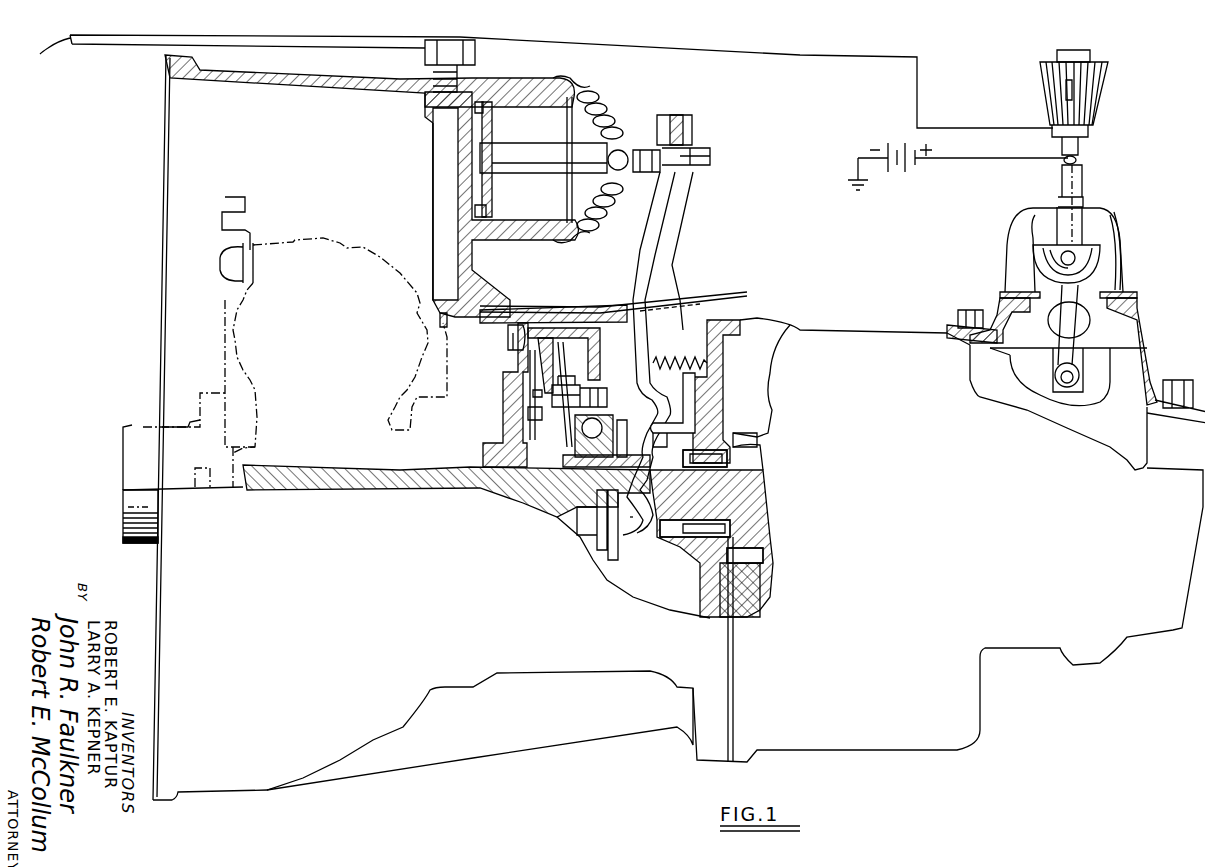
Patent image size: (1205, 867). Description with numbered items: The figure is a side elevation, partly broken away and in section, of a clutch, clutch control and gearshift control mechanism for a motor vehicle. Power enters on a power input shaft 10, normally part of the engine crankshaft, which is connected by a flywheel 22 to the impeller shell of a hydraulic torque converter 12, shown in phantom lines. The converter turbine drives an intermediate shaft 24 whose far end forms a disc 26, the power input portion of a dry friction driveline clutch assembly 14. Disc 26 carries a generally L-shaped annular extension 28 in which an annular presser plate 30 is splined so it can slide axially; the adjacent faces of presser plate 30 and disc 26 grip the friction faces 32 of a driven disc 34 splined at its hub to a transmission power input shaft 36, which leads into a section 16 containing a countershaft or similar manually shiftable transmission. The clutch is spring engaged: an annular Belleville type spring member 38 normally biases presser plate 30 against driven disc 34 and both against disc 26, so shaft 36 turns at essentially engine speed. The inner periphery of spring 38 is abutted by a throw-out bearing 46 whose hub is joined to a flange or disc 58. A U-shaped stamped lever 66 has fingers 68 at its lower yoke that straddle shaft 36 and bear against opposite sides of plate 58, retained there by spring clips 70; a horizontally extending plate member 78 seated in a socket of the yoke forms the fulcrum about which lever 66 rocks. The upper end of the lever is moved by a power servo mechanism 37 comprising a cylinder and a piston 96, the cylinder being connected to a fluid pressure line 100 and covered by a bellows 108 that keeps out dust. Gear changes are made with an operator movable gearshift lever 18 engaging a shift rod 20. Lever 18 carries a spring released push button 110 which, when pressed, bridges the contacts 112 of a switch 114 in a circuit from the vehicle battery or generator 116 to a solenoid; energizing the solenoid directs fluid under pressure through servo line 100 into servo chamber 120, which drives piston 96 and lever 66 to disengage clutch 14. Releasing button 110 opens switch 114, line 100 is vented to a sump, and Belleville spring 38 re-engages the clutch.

The power input shaft 10 is at (123, 499).
The hydraulic torque converter 12 is at (338, 332).
The dry friction driveline clutch assembly 14 is at (578, 304).
The transmission section 16 is at (927, 551).
The gearshift lever 18 is at (1092, 186).
The shift rod 20 is at (1097, 393).
The flywheel 22 is at (218, 258).
The intermediate shaft 24 is at (330, 476).
The disc 26 is at (512, 397).
The L-shaped annular extension 28 is at (587, 348).
The annular presser plate 30 is at (523, 353).
The friction faces 32 is at (545, 308).
The driven disc 34 is at (530, 373).
The transmission power input shaft 36 is at (740, 507).
The power servo mechanism 37 is at (607, 100).
The Belleville type spring member 38 is at (575, 380).
The release or throw-out bearing 46 is at (618, 404).
The flange or disc 58 is at (625, 427).
The lever 66 is at (686, 249).
The fingers 68 is at (640, 530).
The spring clips 70 is at (620, 545).
The plate member 78 is at (700, 416).
The piston 96 is at (482, 188).
The fluid pressure line 100 is at (532, 81).
The bellows 108 is at (604, 118).
The push button 110 is at (1090, 55).
The contacts 112 is at (1062, 87).
The switch 114 is at (1031, 81).
The vehicle battery or generator 116 is at (908, 172).
The servo chamber 120 is at (482, 132).